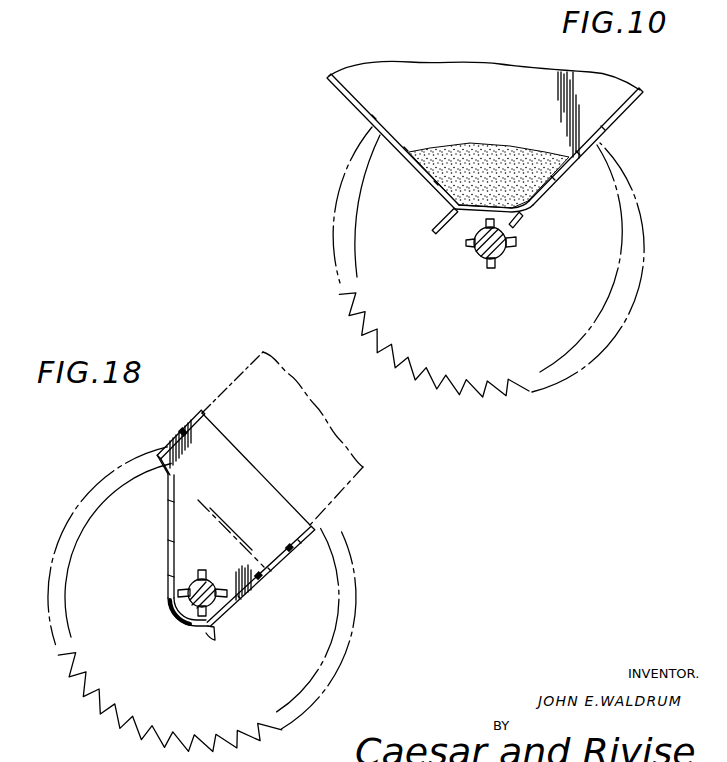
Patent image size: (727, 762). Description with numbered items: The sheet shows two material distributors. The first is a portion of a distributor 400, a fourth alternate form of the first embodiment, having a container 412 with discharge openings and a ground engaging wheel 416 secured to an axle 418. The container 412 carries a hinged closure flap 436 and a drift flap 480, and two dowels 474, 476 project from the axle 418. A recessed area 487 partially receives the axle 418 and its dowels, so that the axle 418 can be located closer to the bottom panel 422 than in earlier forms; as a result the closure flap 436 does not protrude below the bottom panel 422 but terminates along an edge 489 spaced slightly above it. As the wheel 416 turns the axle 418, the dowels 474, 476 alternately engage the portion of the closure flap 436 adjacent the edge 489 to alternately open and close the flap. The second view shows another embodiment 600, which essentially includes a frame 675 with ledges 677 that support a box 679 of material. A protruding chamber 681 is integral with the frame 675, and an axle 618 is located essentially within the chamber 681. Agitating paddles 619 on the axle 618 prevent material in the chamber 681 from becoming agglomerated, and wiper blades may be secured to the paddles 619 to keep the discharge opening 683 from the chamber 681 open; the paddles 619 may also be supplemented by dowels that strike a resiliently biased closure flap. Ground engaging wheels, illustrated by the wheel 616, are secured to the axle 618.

In FIG. 10, the distributor 400 is at (352, 118).
In FIG. 10, the container 412 is at (447, 62).
In FIG. 10, the bottom panel 422 is at (363, 152).
In FIG. 10, the hinged closure flap 436 is at (546, 186).
In FIG. 10, the drift flap 480 is at (444, 222).
In FIG. 10, the edge 489 is at (521, 227).
In FIG. 10, the recessed area 487 is at (458, 226).
In FIG. 10, the dowel 474 is at (468, 248).
In FIG. 10, the axle 418 is at (503, 254).
In FIG. 10, the dowel 476 is at (493, 270).
In FIG. 10, the ground engaging wheel 416 is at (620, 236).
In FIG. 18, the box 679 is at (251, 370).
In FIG. 18, the another embodiment of the invention 600 is at (383, 500).
In FIG. 18, the ledges 677 is at (175, 458).
In FIG. 18, the protruding chamber 681 is at (178, 538).
In FIG. 18, the frame 675 is at (302, 547).
In FIG. 18, the discharge opening 683 is at (206, 632).
In FIG. 18, the axle 618 is at (213, 588).
In FIG. 18, the agitating paddles 619 is at (201, 570).
In FIG. 18, the wheel 616 is at (350, 628).